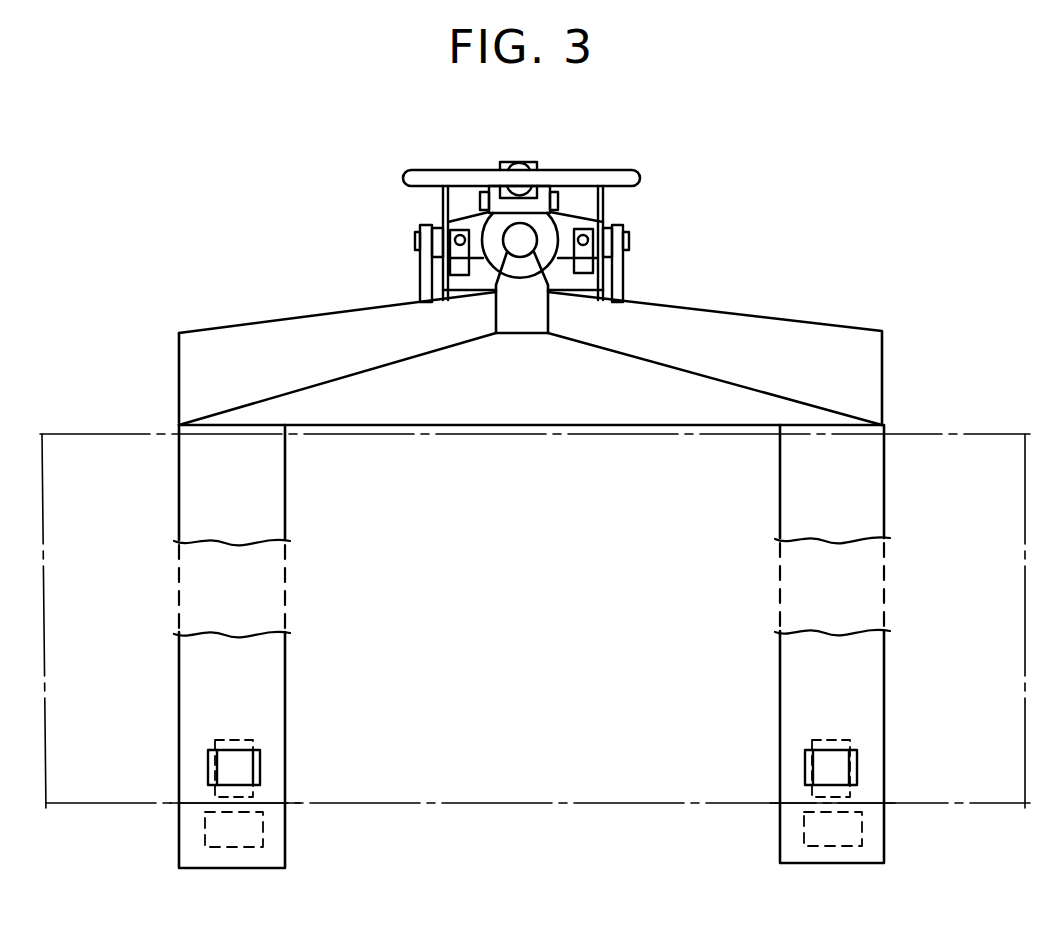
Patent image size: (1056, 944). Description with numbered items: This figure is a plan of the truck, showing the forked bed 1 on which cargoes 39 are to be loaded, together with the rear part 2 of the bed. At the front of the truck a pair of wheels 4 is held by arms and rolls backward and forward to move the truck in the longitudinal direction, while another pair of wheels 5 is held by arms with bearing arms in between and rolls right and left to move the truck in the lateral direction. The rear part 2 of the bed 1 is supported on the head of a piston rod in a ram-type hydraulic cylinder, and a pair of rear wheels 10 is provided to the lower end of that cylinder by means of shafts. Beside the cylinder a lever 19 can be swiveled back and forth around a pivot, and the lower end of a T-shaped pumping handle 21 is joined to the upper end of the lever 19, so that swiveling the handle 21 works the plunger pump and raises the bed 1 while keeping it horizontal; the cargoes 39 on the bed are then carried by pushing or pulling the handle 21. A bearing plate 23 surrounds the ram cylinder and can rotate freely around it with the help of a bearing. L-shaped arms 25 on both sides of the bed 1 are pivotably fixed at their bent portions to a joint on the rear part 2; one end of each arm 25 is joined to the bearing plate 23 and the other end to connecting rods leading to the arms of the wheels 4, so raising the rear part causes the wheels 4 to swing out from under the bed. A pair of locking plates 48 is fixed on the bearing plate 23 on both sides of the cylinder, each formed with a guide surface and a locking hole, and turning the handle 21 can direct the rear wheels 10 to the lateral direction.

The forked bed 1 is at (270, 517).
The rear part of the bed 2 is at (525, 322).
The wheels 4 is at (238, 767).
The wheels 5 is at (237, 828).
The rear wheels 10 is at (455, 205).
The lever 19 is at (507, 162).
The T-shaped pumping handle 21 is at (635, 178).
The bearing plate 23 is at (548, 215).
The L-shaped arms 25 is at (432, 268).
The cargoes 39 is at (563, 801).
The locking plates 48 is at (460, 276).